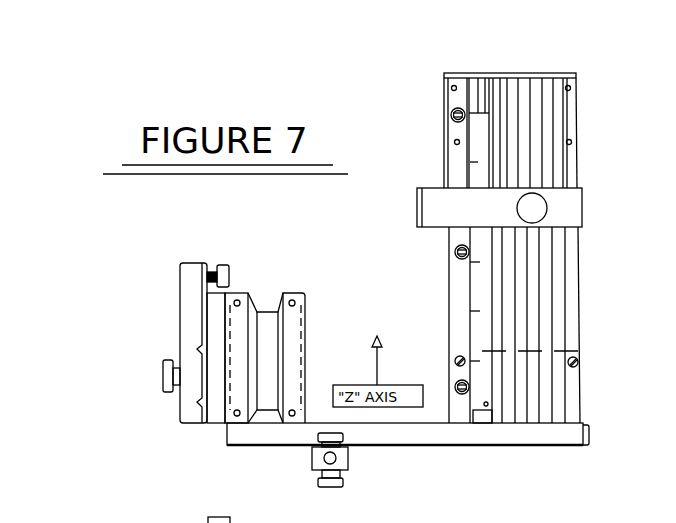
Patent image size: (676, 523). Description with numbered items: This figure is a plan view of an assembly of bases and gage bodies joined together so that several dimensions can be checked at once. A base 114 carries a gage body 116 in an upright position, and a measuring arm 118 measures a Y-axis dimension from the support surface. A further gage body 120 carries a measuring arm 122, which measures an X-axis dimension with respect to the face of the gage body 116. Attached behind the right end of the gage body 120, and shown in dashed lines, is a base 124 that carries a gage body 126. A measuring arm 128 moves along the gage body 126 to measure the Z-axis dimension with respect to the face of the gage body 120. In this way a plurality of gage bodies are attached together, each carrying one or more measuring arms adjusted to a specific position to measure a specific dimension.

The base 114 is at (293, 339).
The gage body 116 is at (182, 388).
The measuring arm 118 is at (172, 343).
The gage body 120 is at (408, 466).
The measuring arm 122 is at (370, 472).
The base 124 is at (610, 366).
The gage body 126 is at (550, 248).
The measuring arm 128 is at (534, 185).